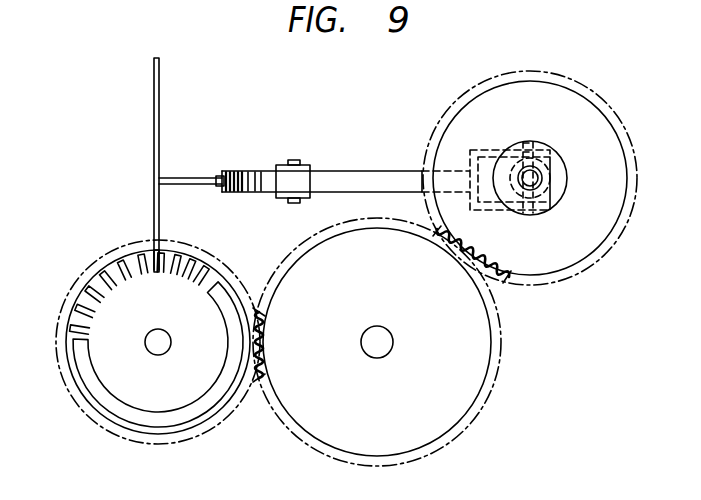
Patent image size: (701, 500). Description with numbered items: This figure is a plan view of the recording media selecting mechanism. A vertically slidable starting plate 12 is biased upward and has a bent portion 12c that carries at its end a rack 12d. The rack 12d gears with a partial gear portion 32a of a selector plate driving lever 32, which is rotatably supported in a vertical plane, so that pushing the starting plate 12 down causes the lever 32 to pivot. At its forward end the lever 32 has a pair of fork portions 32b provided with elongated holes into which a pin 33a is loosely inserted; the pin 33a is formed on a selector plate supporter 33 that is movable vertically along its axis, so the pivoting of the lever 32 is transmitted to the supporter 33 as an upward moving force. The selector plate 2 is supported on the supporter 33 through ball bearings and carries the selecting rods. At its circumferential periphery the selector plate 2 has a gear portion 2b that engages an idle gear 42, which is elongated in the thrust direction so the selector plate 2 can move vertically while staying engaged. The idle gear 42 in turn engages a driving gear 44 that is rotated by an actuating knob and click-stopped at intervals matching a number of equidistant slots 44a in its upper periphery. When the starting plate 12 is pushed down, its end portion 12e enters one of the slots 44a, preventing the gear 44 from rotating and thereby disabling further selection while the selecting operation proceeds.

The selector plate 2 is at (628, 222).
The gear portion 2b is at (503, 278).
The starting plate 12 is at (153, 102).
The bent portion 12c is at (181, 177).
The rack 12d is at (224, 178).
The end portion 12e is at (160, 253).
The selector plate driving lever 32 is at (345, 171).
The partial gear portion 32a is at (245, 170).
The fork portions 32b is at (493, 157).
The selector plate supporter 33 is at (568, 178).
The pin 33a is at (531, 145).
The idle gear 42 is at (496, 372).
The driving gear 44 is at (62, 372).
The slots 44a is at (112, 277).